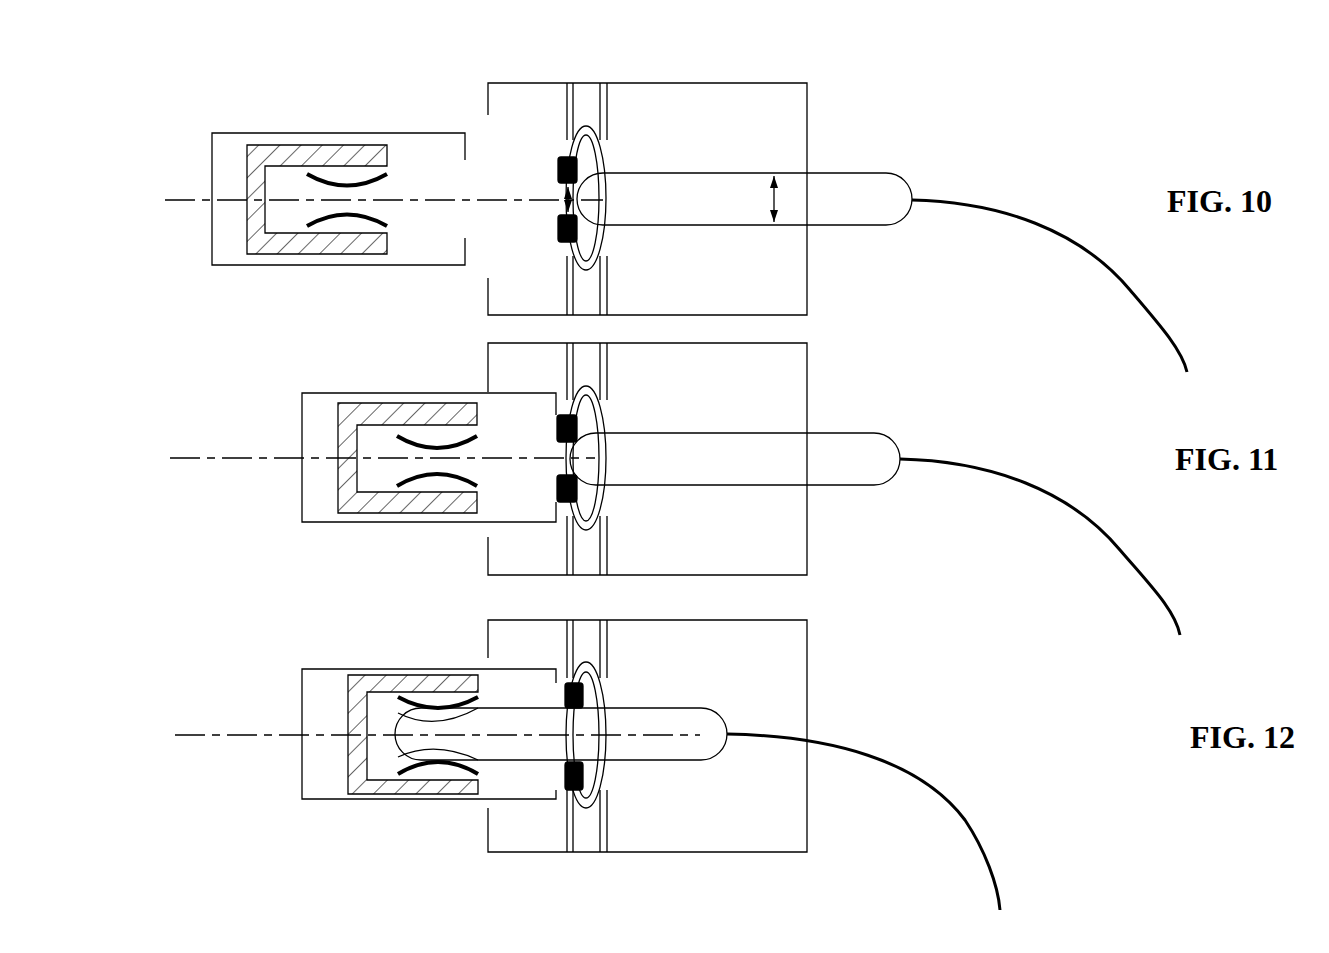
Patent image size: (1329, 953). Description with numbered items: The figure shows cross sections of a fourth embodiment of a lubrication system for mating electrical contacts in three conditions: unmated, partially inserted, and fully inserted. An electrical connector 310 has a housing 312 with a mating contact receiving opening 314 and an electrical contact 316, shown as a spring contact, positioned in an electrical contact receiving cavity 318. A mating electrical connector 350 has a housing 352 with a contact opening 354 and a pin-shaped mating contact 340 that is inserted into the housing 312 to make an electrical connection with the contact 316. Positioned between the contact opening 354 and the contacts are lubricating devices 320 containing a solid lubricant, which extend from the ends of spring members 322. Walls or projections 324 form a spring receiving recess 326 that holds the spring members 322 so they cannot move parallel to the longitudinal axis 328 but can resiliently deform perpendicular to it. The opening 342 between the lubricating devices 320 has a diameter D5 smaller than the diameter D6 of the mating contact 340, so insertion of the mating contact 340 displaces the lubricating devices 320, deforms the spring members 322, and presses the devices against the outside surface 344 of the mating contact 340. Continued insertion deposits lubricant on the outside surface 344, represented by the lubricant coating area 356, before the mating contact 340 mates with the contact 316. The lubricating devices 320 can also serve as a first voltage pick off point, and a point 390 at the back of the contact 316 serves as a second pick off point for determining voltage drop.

In FIG. 10, the electrical connector 310 is at (337, 47).
In FIG. 11, the electrical connector 310 is at (386, 374).
In FIG. 12, the electrical connector 310 is at (362, 642).
In FIG. 10, the housing 312 is at (262, 133).
In FIG. 11, the housing 312 is at (330, 393).
In FIG. 12, the housing 312 is at (300, 716).
In FIG. 10, the mating contact receiving opening 314 is at (402, 193).
In FIG. 11, the mating contact receiving opening 314 is at (508, 463).
In FIG. 12, the mating contact receiving opening 314 is at (535, 768).
In FIG. 10, the electrical contact 316 is at (347, 183).
In FIG. 11, the electrical contact 316 is at (433, 483).
In FIG. 12, the electrical contact 316 is at (440, 705).
In FIG. 10, the electrical contact receiving cavity 318 is at (258, 238).
In FIG. 11, the electrical contact receiving cavity 318 is at (438, 490).
In FIG. 12, the electrical contact receiving cavity 318 is at (450, 782).
In FIG. 10, the lubricating device 320 is at (557, 163).
In FIG. 11, the lubricating device 320 is at (557, 428).
In FIG. 12, the lubricating device 320 is at (567, 683).
In FIG. 10, the spring member 322 is at (607, 165).
In FIG. 11, the spring member 322 is at (607, 428).
In FIG. 12, the spring member 322 is at (607, 697).
In FIG. 10, the wall or projection 324 is at (567, 108).
In FIG. 11, the wall or projection 324 is at (573, 358).
In FIG. 12, the wall or projection 324 is at (600, 660).
In FIG. 10, the spring receiving recess 326 is at (588, 97).
In FIG. 11, the spring receiving recess 326 is at (587, 567).
In FIG. 12, the spring receiving recess 326 is at (588, 837).
In FIG. 10, the longitudinal axis 328 is at (202, 200).
In FIG. 11, the longitudinal axis 328 is at (212, 458).
In FIG. 12, the longitudinal axis 328 is at (230, 736).
In FIG. 10, the mating contact 340 is at (882, 247).
In FIG. 11, the mating contact 340 is at (875, 504).
In FIG. 12, the mating contact 340 is at (697, 749).
In FIG. 10, the opening 342 is at (548, 200).
In FIG. 10, the outside surface 344 is at (727, 227).
In FIG. 11, the outside surface 344 is at (720, 433).
In FIG. 12, the outside surface 344 is at (560, 705).
In FIG. 10, the mating electrical connector 350 is at (633, 80).
In FIG. 11, the mating electrical connector 350 is at (825, 355).
In FIG. 12, the mating electrical connector 350 is at (825, 655).
In FIG. 10, the housing 352 is at (807, 108).
In FIG. 11, the housing 352 is at (807, 517).
In FIG. 12, the housing 352 is at (763, 853).
In FIG. 10, the contact opening 354 is at (487, 140).
In FIG. 11, the contact opening 354 is at (487, 390).
In FIG. 12, the contact opening 354 is at (507, 808).
In FIG. 12, the lubricant coating area 356 is at (397, 713).
In FIG. 10, the voltage pick off point 390 is at (310, 175).
In FIG. 11, the voltage pick off point 390 is at (400, 441).
In FIG. 12, the voltage pick off point 390 is at (407, 697).
In FIG. 10, the opening diameter D5 is at (577, 198).
In FIG. 10, the mating contact diameter D6 is at (775, 200).